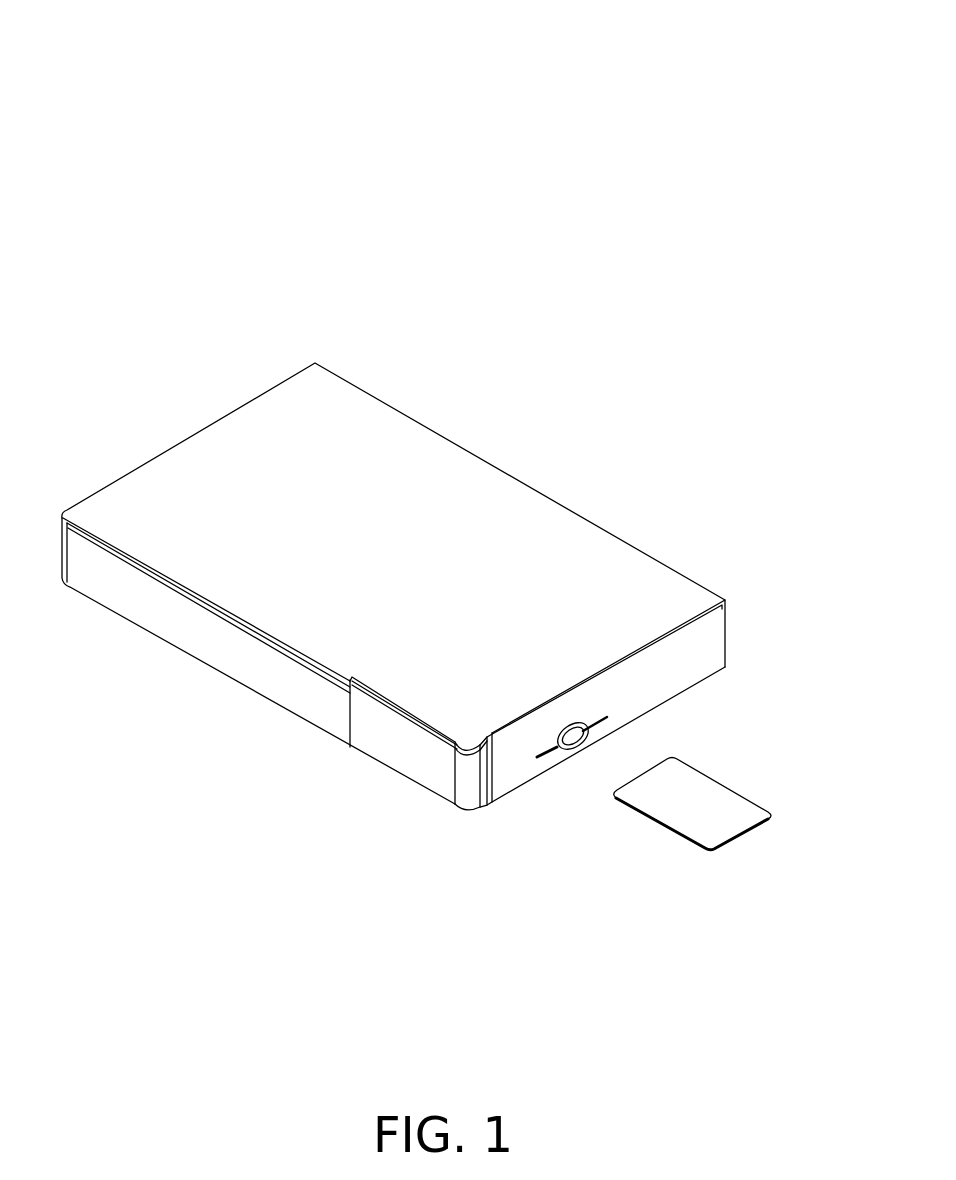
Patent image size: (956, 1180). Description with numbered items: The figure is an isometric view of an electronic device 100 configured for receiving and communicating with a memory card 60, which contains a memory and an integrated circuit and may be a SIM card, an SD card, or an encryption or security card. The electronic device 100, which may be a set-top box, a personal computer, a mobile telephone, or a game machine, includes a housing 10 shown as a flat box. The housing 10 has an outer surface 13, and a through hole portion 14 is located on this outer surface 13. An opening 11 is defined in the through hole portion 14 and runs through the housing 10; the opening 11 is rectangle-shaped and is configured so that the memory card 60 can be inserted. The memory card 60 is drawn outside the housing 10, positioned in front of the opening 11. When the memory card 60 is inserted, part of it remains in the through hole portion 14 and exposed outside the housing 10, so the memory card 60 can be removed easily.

The electronic device 100 is at (447, 459).
The housing 10 is at (262, 438).
The outer surface 13 is at (710, 640).
The opening 11 is at (535, 760).
The through hole portion 14 is at (577, 733).
The memory card 60 is at (728, 823).